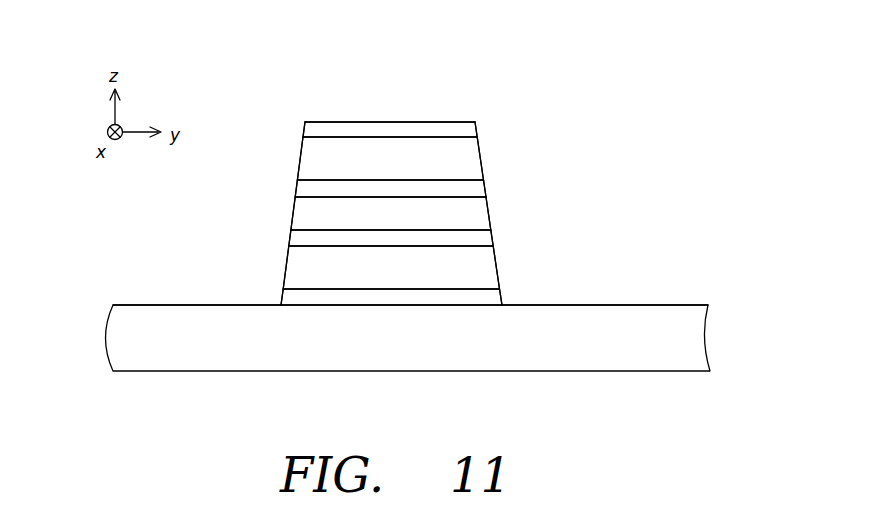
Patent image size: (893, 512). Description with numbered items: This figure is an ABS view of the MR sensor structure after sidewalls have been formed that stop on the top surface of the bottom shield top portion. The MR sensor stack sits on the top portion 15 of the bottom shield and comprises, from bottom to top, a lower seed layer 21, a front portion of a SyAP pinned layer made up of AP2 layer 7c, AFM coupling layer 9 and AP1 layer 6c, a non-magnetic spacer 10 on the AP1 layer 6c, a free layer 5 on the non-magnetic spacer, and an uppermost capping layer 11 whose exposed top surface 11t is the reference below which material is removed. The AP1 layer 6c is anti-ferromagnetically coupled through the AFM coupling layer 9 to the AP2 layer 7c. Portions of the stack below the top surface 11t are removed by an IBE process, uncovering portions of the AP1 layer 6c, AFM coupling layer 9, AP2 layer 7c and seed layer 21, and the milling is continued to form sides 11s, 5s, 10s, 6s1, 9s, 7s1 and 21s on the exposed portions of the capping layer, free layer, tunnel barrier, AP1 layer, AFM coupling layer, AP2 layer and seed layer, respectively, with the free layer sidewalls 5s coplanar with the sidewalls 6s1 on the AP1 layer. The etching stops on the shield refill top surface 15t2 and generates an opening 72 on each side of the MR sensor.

The free layer 5 is at (391, 153).
The free layer sidewalls 5s is at (300, 160).
The AP1 layer 6c is at (467, 213).
The AP1 layer sidewalls 6s1 is at (294, 213).
The AP2 layer 7c is at (365, 263).
The AP2 layer sides 7s1 is at (286, 266).
The AFM coupling layer 9 is at (415, 237).
The AFM coupling layer sides 9s is at (289, 241).
The non-magnetic spacer 10 is at (457, 188).
The non-magnetic spacer sides 10s is at (297, 190).
The capping layer 11 is at (325, 130).
The capping layer sides 11s is at (305, 131).
The capping layer top surface 11t is at (424, 122).
The top portion of bottom shield 15 is at (687, 338).
The shield refill top surface 15t2 is at (150, 305).
The seed layer 21 is at (314, 297).
The seed layer sides 21s is at (500, 299).
The opening 72 is at (204, 102).